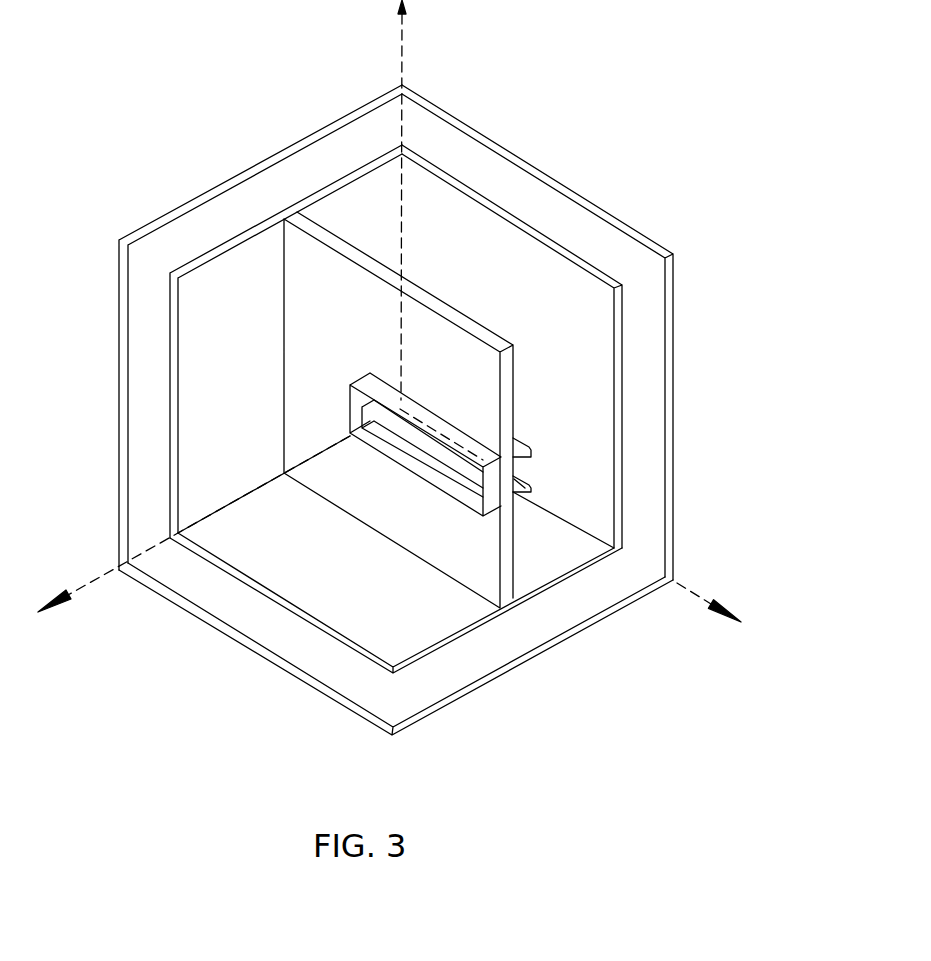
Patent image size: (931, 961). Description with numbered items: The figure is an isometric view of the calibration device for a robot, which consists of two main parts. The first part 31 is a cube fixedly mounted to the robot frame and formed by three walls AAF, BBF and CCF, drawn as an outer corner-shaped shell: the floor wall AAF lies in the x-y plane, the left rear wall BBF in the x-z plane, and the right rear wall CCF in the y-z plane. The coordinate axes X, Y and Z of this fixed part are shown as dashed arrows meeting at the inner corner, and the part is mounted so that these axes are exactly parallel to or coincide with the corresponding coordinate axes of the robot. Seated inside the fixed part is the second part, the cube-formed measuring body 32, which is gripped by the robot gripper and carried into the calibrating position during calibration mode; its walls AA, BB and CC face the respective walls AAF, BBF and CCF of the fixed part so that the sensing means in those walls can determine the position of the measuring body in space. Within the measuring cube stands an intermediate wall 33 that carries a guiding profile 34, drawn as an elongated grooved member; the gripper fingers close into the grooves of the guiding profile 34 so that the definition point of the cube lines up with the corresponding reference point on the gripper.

The first calibration part 31 is at (444, 410).
The measuring body 32 is at (450, 418).
The intermediate wall 33 is at (455, 307).
The guiding profile 34 is at (390, 464).
The wall BB is at (370, 205).
The wall BBF is at (240, 197).
The wall CC is at (567, 288).
The wall CCF is at (637, 433).
The wall AA is at (401, 628).
The wall AAF is at (512, 630).
The x coordinate axis X is at (194, 539).
The y coordinate axis Y is at (570, 531).
The z coordinate axis Z is at (415, 200).